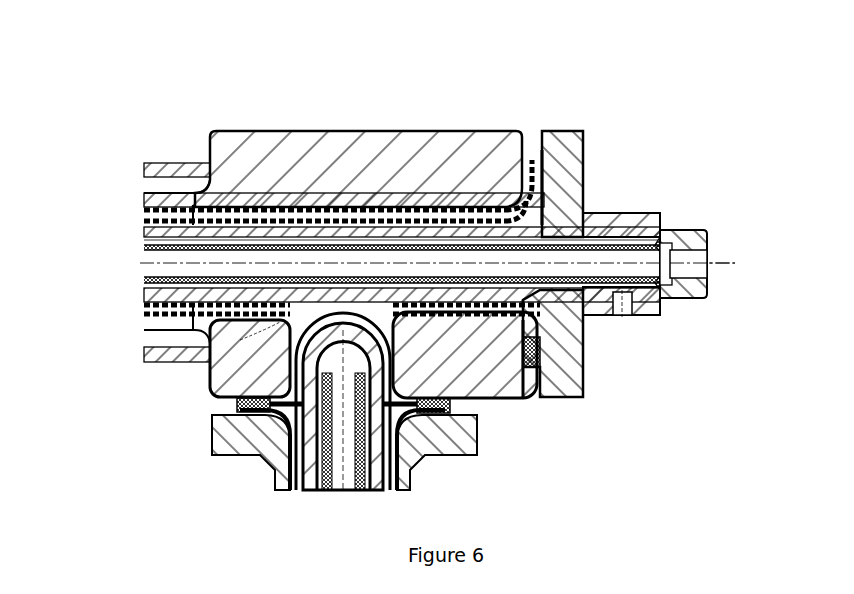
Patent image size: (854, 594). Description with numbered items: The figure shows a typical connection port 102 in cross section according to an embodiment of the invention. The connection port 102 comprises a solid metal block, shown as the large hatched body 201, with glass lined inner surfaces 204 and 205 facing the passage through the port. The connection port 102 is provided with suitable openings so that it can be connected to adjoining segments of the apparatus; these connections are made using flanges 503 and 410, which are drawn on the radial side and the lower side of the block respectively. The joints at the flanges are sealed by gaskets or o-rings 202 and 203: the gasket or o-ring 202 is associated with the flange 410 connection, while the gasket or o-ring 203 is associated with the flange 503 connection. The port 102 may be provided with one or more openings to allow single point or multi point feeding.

The connection port 102 is at (455, 115).
The housing block 201 is at (262, 130).
The gasket or o-ring 202 is at (235, 405).
The gasket or o-ring 203 is at (531, 370).
The glass lined inner surface 204 is at (215, 372).
The glass lined inner surface 205 is at (583, 185).
The flange 410 is at (477, 450).
The flange 503 is at (583, 370).